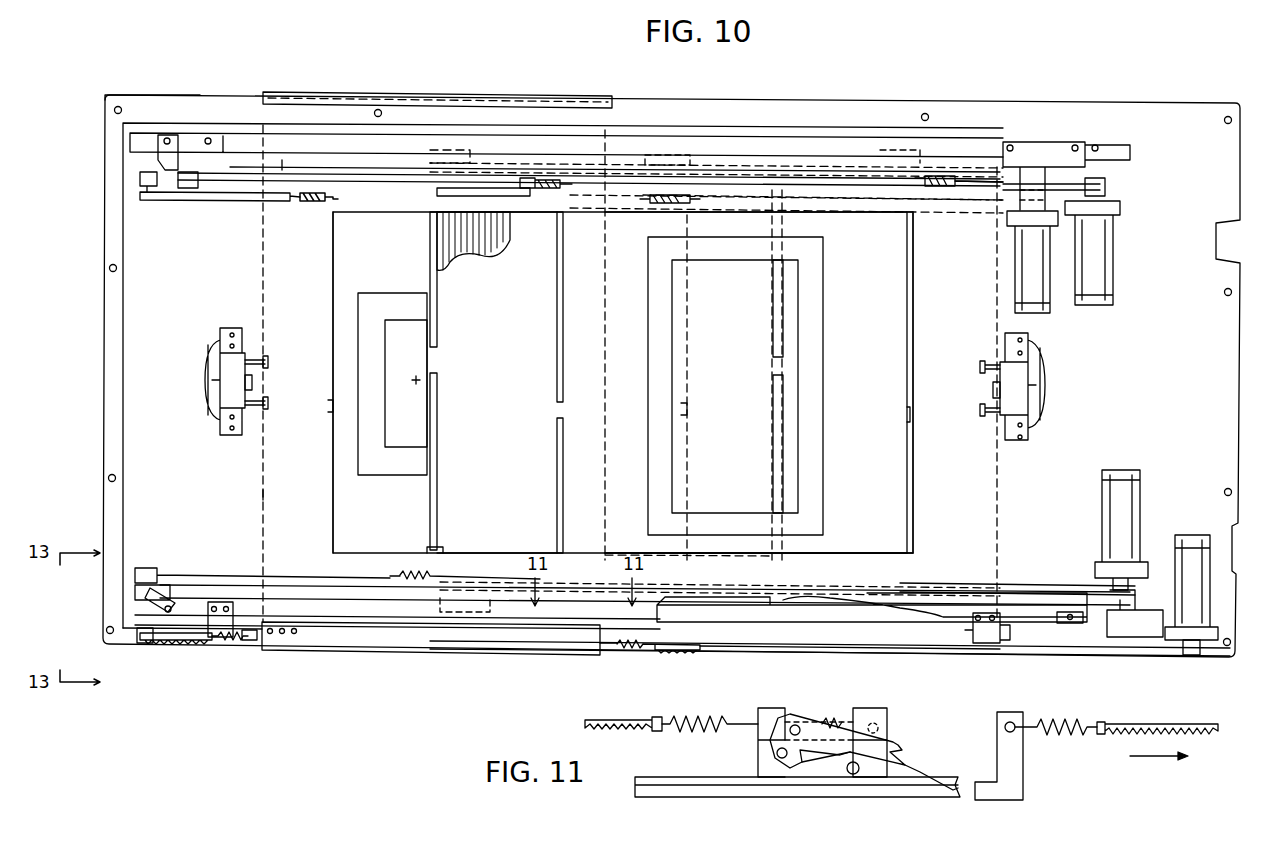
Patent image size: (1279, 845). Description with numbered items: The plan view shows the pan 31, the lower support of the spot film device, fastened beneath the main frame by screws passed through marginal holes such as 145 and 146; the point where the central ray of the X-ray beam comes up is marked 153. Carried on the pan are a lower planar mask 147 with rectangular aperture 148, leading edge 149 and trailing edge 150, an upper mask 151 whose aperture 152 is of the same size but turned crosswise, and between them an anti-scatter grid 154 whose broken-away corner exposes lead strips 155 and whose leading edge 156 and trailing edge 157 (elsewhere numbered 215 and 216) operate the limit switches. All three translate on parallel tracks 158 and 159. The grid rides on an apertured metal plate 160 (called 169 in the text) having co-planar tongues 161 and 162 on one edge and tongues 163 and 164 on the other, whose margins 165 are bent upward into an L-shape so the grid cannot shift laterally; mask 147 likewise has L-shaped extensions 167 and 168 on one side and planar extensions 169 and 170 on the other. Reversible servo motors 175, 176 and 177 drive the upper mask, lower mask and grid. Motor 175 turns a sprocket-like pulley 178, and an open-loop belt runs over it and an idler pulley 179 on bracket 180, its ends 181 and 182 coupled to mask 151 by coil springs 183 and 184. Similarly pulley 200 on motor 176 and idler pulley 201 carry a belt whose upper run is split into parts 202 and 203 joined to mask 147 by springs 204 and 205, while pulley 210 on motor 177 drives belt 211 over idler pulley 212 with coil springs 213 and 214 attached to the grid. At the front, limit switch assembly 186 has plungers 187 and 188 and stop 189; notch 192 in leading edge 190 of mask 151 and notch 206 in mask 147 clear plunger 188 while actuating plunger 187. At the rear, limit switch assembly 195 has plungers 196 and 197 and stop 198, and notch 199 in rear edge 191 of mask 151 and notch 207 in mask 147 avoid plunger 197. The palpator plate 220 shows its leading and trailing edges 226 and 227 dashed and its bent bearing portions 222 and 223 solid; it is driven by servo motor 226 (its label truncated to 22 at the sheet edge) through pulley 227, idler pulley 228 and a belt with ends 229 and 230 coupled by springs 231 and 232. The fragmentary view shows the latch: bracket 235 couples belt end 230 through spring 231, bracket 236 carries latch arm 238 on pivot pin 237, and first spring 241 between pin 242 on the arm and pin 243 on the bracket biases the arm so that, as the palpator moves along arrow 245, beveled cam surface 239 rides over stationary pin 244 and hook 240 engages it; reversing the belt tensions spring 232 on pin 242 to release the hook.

In FIG. 10, the piston 22 is at (1200, 598).
In FIG. 10, the pan 31 is at (208, 82).
In FIG. 10, the hole 145 is at (923, 114).
In FIG. 10, the hole 146 is at (1224, 490).
In FIG. 10, the lower planar mask 147 is at (398, 525).
In FIG. 10, the rectangular aperture 148 is at (402, 325).
In FIG. 10, the leading edge of mask 149 is at (332, 471).
In FIG. 10, the trailing edge of mask 150 is at (684, 473).
In FIG. 10, the upper mask 151 is at (882, 502).
In FIG. 10, the aperture 152 is at (798, 340).
In FIG. 10, the central ray point 153 is at (425, 382).
In FIG. 10, the anti-scatter X-ray grid 154 is at (530, 515).
In FIG. 10, the lead strips 155 is at (470, 255).
In FIG. 10, the leading edge of grid 156 is at (425, 492).
In FIG. 10, the trailing edge of grid 157 is at (785, 450).
In FIG. 10, the track 158 is at (192, 600).
In FIG. 10, the track 159 is at (282, 172).
In FIG. 10, the bar 160 is at (435, 192).
In FIG. 10, the tongue 161 is at (447, 150).
In FIG. 10, the tongue 162 is at (772, 160).
In FIG. 10, the tongue 163 is at (784, 602).
In FIG. 10, the tongue 164 is at (440, 598).
In FIG. 10, the bent margin 165 is at (462, 606).
In FIG. 10, the tongue 167 is at (356, 140).
In FIG. 10, the tongue 168 is at (656, 153).
In FIG. 10, the planar extension 169 is at (356, 592).
In FIG. 10, the planar extension 170 is at (703, 624).
In FIG. 10, the servo motor 175 is at (1105, 274).
In FIG. 10, the servo motor 176 is at (1045, 316).
In FIG. 10, the servo motor 177 is at (1120, 472).
In FIG. 10, the sprocket-like pulley 178 is at (1108, 184).
In FIG. 10, the idler pulley 179 is at (185, 190).
In FIG. 10, the bracket 180 is at (170, 133).
In FIG. 10, the belt end 181 is at (500, 172).
In FIG. 10, the belt end 182 is at (985, 178).
In FIG. 10, the coil spring 183 is at (542, 176).
In FIG. 10, the coil spring 184 is at (940, 176).
In FIG. 10, the limit switch assembly 186 is at (215, 329).
In FIG. 10, the plunger 187 is at (262, 355).
In FIG. 10, the plunger 188 is at (248, 412).
In FIG. 10, the stop 189 is at (254, 380).
In FIG. 10, the leading edge of upper mask 190 is at (556, 333).
In FIG. 10, the rear edge of upper mask 191 is at (914, 328).
In FIG. 10, the notch 192 is at (555, 410).
In FIG. 10, the limit switch assembly 195 is at (1068, 384).
In FIG. 10, the plunger 196 is at (980, 366).
In FIG. 10, the plunger 197 is at (982, 418).
In FIG. 10, the stop 198 is at (992, 389).
In FIG. 10, the notch 199 is at (912, 424).
In FIG. 10, the pulley 200 is at (1037, 190).
In FIG. 10, the idler pulley 201 is at (145, 196).
In FIG. 10, the belt run part 202 is at (236, 203).
In FIG. 10, the belt run part 203 is at (962, 206).
In FIG. 10, the spring 204 is at (326, 202).
In FIG. 10, the spring 205 is at (668, 193).
In FIG. 10, the notch 206 is at (328, 410).
In FIG. 10, the notch 207 is at (690, 406).
In FIG. 10, the pulley 210 is at (1132, 638).
In FIG. 10, the belt 211 is at (1030, 582).
In FIG. 10, the idler pulley 212 is at (145, 566).
In FIG. 10, the coil spring 213 is at (805, 588).
In FIG. 10, the coil spring 214 is at (432, 545).
In FIG. 10, the leading edge of grid 215 is at (440, 428).
In FIG. 10, the trailing edge of grid 216 is at (785, 226).
In FIG. 10, the centrally apertured plate 220 is at (275, 495).
In FIG. 10, the inwardly bent portion 222 is at (306, 634).
In FIG. 10, the inwardly bent portion 223 is at (298, 92).
In FIG. 10, the servo motor 226 is at (262, 490).
In FIG. 10, the pulley 227 is at (602, 448).
In FIG. 10, the idler pulley 228 is at (145, 646).
In FIG. 10, the belt end 229 is at (192, 642).
In FIG. 11, the belt end 229 is at (627, 726).
In FIG. 10, the belt end 230 is at (665, 651).
In FIG. 11, the belt end 230 is at (1220, 728).
In FIG. 10, the spring 231 is at (236, 646).
In FIG. 11, the spring 231 is at (1066, 732).
In FIG. 10, the spring 232 is at (232, 630).
In FIG. 11, the spring 232 is at (693, 728).
In FIG. 10, the bracket 235 is at (248, 628).
In FIG. 11, the bracket 235 is at (997, 748).
In FIG. 11, the bracket 236 is at (876, 708).
In FIG. 11, the pivot pin 237 is at (781, 760).
In FIG. 11, the latch arm 238 is at (826, 760).
In FIG. 11, the beveled cam surface 239 is at (893, 766).
In FIG. 11, the hook portion 240 is at (945, 794).
In FIG. 11, the first spring 241 is at (824, 718).
In FIG. 11, the pin 242 is at (775, 712).
In FIG. 11, the pin 243 is at (882, 728).
In FIG. 11, the stationary pin 244 is at (856, 775).
In FIG. 11, the arrow 245 is at (1150, 757).